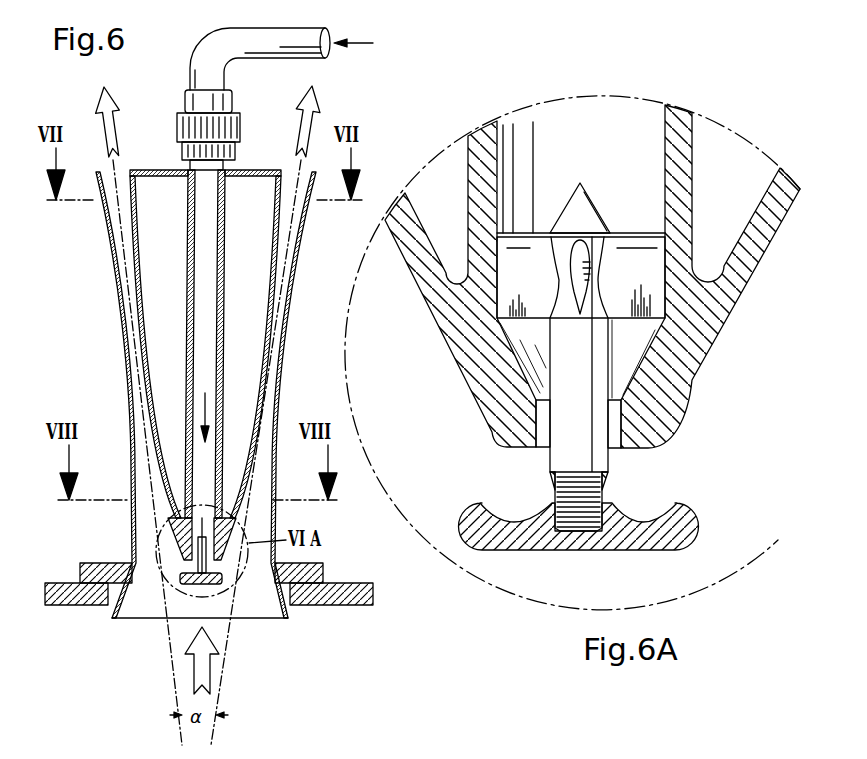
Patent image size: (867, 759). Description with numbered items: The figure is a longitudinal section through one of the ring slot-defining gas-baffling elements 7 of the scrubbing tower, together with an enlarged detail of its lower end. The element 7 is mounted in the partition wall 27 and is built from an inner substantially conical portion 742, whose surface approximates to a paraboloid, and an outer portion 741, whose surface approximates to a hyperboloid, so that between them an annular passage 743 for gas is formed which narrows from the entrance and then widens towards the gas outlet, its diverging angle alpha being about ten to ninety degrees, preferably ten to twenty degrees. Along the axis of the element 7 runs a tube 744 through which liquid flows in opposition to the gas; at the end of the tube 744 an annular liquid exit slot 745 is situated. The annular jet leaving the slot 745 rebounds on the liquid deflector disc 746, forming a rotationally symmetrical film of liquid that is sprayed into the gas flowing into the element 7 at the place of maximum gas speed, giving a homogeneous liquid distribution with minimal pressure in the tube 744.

In FIG. 6, the ring slot-defining element 7 is at (190, 452).
In FIG. 6A, the ring slot-defining element 7 is at (592, 276).
In FIG. 6, the partition wall 27 is at (60, 598).
In FIG. 6, the outer portion 741 is at (117, 263).
In FIG. 6, the inner substantially conical portion 742 is at (140, 351).
In FIG. 6A, the inner substantially conical portion 742 is at (720, 326).
In FIG. 6, the annular passage 743 is at (110, 239).
In FIG. 6, the tube 744 is at (224, 291).
In FIG. 6A, the tube 744 is at (675, 152).
In FIG. 6A, the annular liquid exit slot 745 is at (538, 440).
In FIG. 6, the liquid deflector disc 746 is at (223, 585).
In FIG. 6A, the liquid deflector disc 746 is at (690, 512).